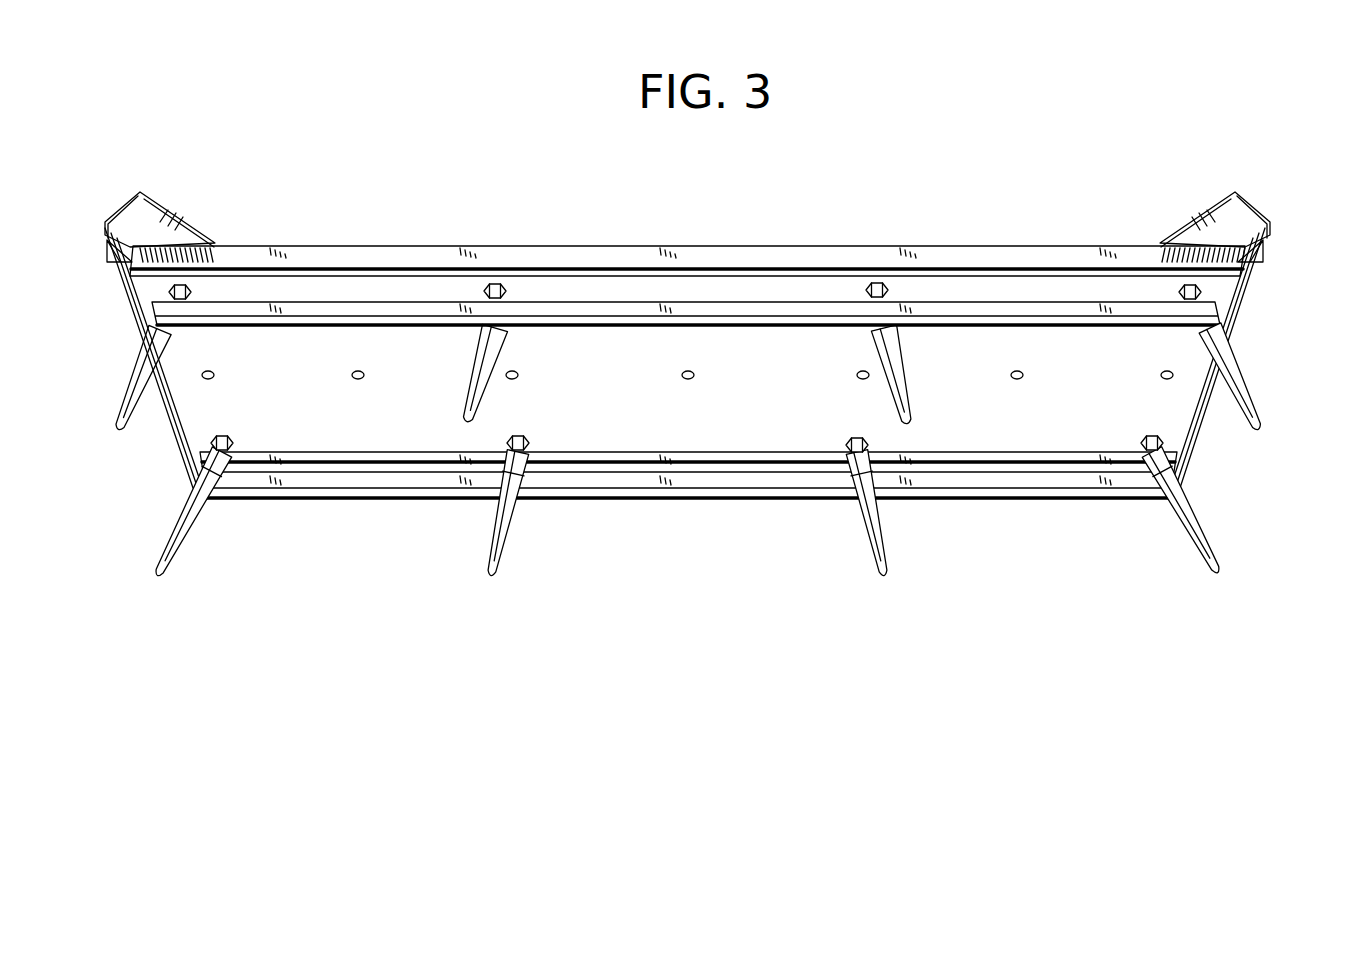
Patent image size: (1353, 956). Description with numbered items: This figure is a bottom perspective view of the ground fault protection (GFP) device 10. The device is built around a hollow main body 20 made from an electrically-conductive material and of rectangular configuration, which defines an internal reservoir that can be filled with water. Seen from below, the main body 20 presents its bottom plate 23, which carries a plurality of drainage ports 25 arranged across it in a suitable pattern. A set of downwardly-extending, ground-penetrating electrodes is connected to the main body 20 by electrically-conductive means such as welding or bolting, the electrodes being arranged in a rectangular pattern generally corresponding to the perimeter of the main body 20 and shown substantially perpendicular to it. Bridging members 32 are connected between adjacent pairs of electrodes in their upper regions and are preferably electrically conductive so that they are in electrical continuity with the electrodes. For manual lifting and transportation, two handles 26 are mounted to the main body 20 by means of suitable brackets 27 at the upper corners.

The ground fault protection device 10 is at (878, 148).
The main body 20 is at (423, 442).
The bottom plate 23 is at (773, 407).
The drainage ports 25 is at (358, 383).
The handle 26 is at (1268, 246).
The bracket 27 is at (150, 203).
The bridging members 32 is at (188, 418).